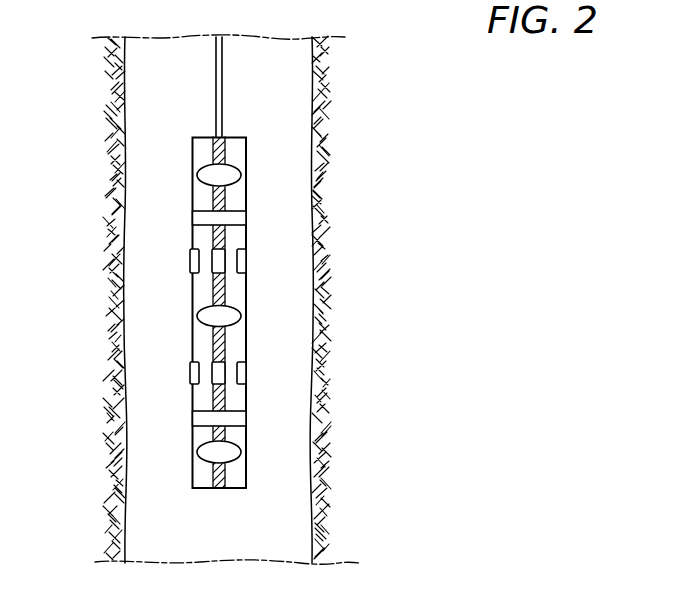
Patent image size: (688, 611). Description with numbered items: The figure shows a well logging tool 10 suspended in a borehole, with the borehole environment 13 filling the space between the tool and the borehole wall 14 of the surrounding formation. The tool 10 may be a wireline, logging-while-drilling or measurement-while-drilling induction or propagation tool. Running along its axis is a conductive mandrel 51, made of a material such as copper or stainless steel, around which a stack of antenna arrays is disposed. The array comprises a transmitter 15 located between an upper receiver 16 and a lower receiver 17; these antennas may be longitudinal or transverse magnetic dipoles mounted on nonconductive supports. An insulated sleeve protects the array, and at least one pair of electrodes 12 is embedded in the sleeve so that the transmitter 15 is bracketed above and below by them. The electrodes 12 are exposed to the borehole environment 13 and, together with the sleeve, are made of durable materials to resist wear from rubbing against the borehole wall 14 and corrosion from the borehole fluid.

The well logging tool 10 is at (279, 152).
The electrodes 12 is at (247, 217).
The borehole environment 13 is at (140, 432).
The borehole wall 14 is at (306, 305).
The transmitter 15 is at (212, 318).
The upper receiver 16 is at (212, 176).
The lower receiver 17 is at (207, 452).
The conductive mandrel 51 is at (212, 240).